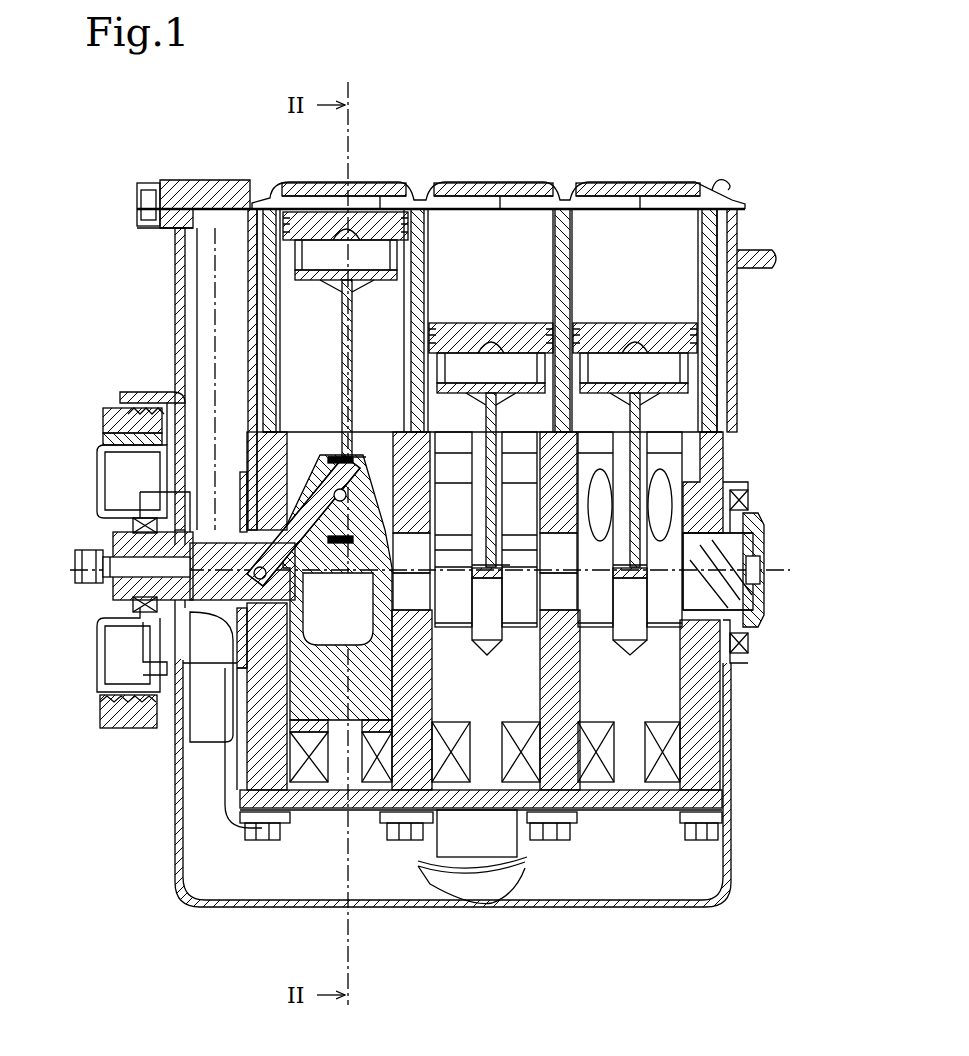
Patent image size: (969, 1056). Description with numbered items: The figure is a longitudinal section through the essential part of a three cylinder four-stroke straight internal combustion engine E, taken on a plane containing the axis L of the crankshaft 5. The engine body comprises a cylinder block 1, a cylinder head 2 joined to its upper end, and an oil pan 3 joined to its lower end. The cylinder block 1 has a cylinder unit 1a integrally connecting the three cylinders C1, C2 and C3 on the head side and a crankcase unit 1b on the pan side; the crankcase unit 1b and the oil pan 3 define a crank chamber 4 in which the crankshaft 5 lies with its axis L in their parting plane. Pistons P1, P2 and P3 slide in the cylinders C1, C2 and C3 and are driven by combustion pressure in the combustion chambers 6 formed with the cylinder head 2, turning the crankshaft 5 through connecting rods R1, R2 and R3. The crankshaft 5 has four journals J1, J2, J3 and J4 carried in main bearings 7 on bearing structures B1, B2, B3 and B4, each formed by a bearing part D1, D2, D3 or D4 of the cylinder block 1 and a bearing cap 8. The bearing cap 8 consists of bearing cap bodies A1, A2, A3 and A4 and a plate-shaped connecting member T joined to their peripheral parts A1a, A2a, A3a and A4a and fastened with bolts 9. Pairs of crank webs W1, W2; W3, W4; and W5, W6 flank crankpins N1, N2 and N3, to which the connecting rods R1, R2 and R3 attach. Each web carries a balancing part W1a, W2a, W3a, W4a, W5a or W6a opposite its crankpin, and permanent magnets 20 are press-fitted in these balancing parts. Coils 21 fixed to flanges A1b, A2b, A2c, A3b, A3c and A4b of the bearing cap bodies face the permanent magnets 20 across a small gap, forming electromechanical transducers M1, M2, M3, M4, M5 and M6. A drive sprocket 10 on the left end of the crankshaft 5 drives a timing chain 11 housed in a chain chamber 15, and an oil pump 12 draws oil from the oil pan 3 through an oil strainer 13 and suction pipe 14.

The internal combustion engine E is at (780, 140).
The cylinder block 1 is at (765, 405).
The cylinder unit 1a is at (737, 330).
The crankcase unit 1b is at (712, 465).
The cylinder head 2 is at (742, 200).
The oil pan 3 is at (731, 712).
The crank chamber 4 is at (240, 745).
The crankshaft 5 is at (758, 540).
The combustion chambers 6 is at (388, 195).
The main bearings 7 is at (128, 757).
The bearing cap 8 is at (225, 795).
The bolts 9 is at (702, 842).
The drive sprocket 10 is at (170, 505).
The timing chain 11 is at (200, 327).
The oil pump 12 is at (185, 648).
The oil strainer 13 is at (480, 900).
The suction pipe 14 is at (178, 880).
The chain chamber 15 is at (183, 268).
The permanent magnets 20 is at (464, 567).
The coils 21 is at (310, 868).
The axis of the crankshaft L is at (438, 572).
The connecting member T is at (627, 859).
The cylinder C1 is at (290, 300).
The cylinder C2 is at (538, 230).
The cylinder C3 is at (683, 225).
The piston P1 is at (405, 214).
The piston P2 is at (508, 330).
The piston P3 is at (635, 330).
The connecting rod R1 is at (352, 312).
The connecting rod R2 is at (395, 440).
The connecting rod R3 is at (645, 410).
The crankpin N1 is at (300, 430).
The crankpin N2 is at (488, 611).
The crankpin N3 is at (630, 611).
The journal J1 is at (185, 498).
The journal J2 is at (425, 565).
The journal J3 is at (572, 565).
The journal J4 is at (705, 600).
The bearing structure B1 is at (298, 460).
The bearing structure B2 is at (365, 455).
The bearing structure B3 is at (596, 460).
The bearing structure B4 is at (748, 445).
The bearing part D1 is at (265, 485).
The bearing part D2 is at (395, 490).
The bearing part D3 is at (582, 335).
The bearing part D4 is at (740, 500).
The bearing cap body A1 is at (247, 772).
The bearing cap body A2 is at (415, 702).
The bearing cap body A3 is at (555, 702).
The bearing cap body A4 is at (710, 652).
The peripheral part A1a is at (230, 870).
The flange A1b is at (290, 905).
The peripheral part A2a is at (385, 870).
The flange A2b is at (372, 905).
The flange A2c is at (445, 880).
The peripheral part A3a is at (570, 870).
The flange A3b is at (522, 905).
The flange A3c is at (585, 880).
The peripheral part A4a is at (722, 792).
The flange A4b is at (678, 900).
The crank web W1 is at (306, 615).
The crank web W2 is at (358, 620).
The crank web W3 is at (452, 650).
The crank web W4 is at (520, 650).
The crank web W5 is at (592, 650).
The crank web W6 is at (668, 650).
The balancing part W1a is at (308, 650).
The balancing part W2a is at (370, 672).
The balancing part W3a is at (447, 335).
The balancing part W4a is at (535, 335).
The balancing part W5a is at (612, 462).
The balancing part W6a is at (681, 462).
The electromechanical transducer M1 is at (330, 715).
The electromechanical transducer M2 is at (352, 735).
The electromechanical transducer M3 is at (473, 740).
The electromechanical transducer M4 is at (498, 735).
The electromechanical transducer M5 is at (615, 740).
The electromechanical transducer M6 is at (642, 735).